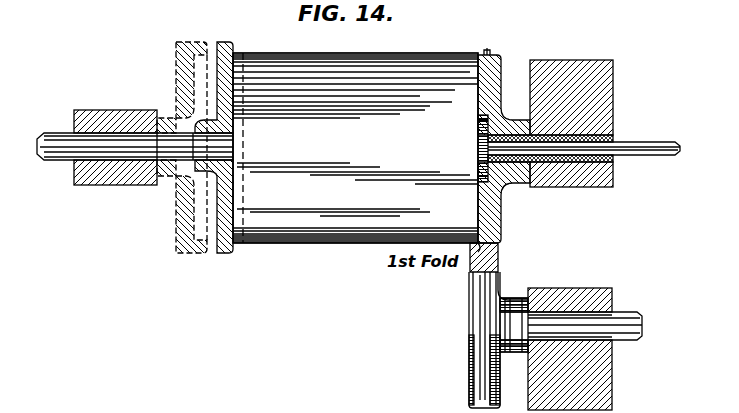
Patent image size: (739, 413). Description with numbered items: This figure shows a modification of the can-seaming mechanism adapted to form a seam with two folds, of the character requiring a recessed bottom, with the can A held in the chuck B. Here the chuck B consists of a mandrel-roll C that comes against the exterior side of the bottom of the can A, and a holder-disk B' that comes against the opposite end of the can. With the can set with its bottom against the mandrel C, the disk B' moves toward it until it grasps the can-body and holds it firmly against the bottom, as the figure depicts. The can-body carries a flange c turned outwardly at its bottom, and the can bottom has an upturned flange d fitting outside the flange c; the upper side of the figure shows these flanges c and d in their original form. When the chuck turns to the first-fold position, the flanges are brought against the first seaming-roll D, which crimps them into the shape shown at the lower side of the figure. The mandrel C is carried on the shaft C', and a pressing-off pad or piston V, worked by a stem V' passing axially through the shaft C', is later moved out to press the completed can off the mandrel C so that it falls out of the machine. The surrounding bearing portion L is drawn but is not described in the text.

The can A is at (397, 55).
The chuck B is at (355, 148).
The holder-disk B' is at (231, 147).
The mandrel-roll C is at (504, 149).
The flange c is at (486, 51).
The upturned flange d is at (489, 52).
The pressing-off pad or piston V is at (469, 148).
The bearing block L is at (343, 123).
The shaft C' is at (562, 136).
The stem V' is at (584, 140).
The first seaming-roll D is at (498, 268).